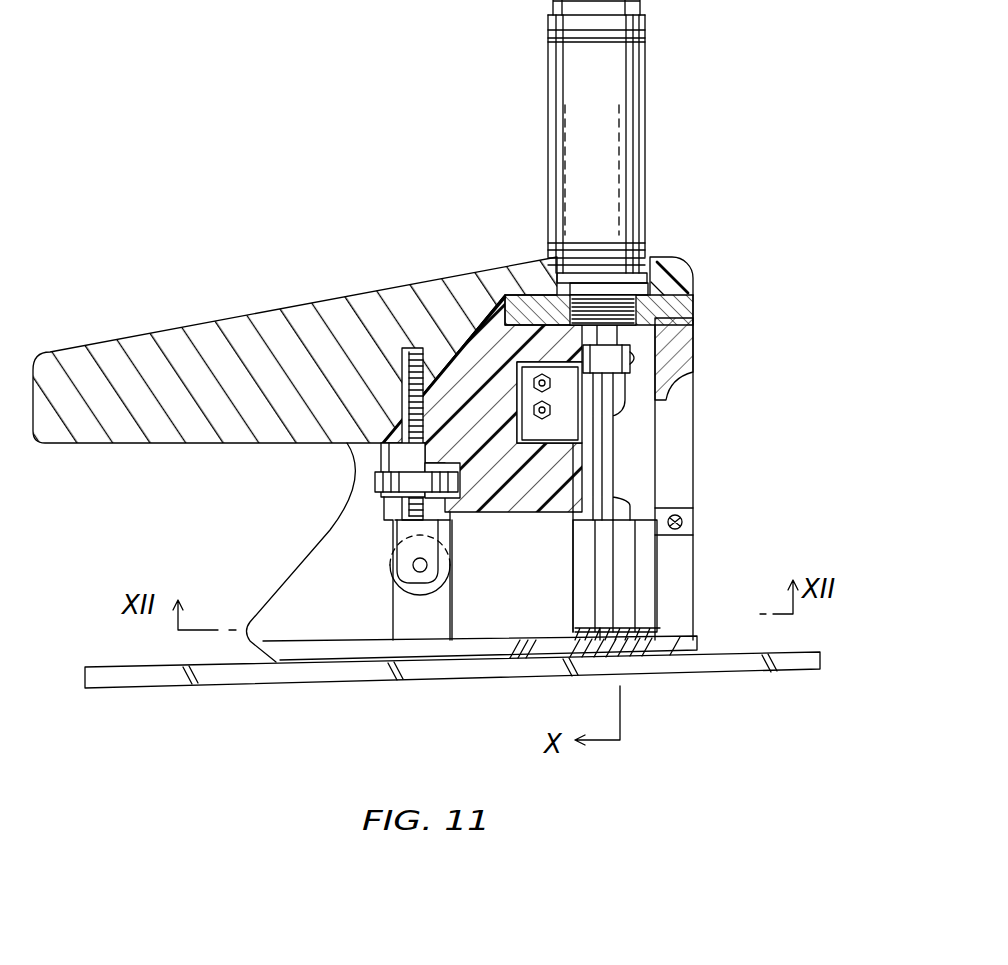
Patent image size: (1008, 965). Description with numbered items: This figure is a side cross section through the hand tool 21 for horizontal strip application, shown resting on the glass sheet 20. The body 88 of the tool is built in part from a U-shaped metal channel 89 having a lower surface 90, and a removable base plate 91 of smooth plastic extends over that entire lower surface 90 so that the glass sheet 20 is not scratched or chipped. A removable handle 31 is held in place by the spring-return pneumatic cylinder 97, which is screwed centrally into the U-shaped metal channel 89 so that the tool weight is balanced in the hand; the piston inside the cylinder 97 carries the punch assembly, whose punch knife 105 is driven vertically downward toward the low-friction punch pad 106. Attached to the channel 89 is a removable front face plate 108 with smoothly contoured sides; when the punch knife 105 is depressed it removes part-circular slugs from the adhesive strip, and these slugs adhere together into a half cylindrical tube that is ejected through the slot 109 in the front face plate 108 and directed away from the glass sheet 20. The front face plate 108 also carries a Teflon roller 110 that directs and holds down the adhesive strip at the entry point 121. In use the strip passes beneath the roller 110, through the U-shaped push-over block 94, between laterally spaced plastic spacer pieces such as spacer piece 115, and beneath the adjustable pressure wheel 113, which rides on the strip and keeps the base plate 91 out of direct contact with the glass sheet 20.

The glass sheet 20 is at (290, 673).
The hand tool 21 is at (498, 360).
The removable handle 31 is at (280, 338).
The body 88 is at (418, 345).
The U-shaped metal channel 89 is at (543, 310).
The lower surface 90 is at (430, 660).
The removable base plate 91 is at (690, 637).
The U-shaped push-over block 94 is at (637, 568).
The pneumatic cylinder 97 is at (617, 103).
The punch knife 105 is at (630, 503).
The punch pad 106 is at (637, 637).
The front face plate 108 is at (690, 320).
The slot 109 is at (680, 433).
The roller 110 is at (690, 522).
The adjustable pressure wheel 113 is at (410, 562).
The plastic spacer piece 115 is at (522, 607).
The entry point 121 is at (668, 598).